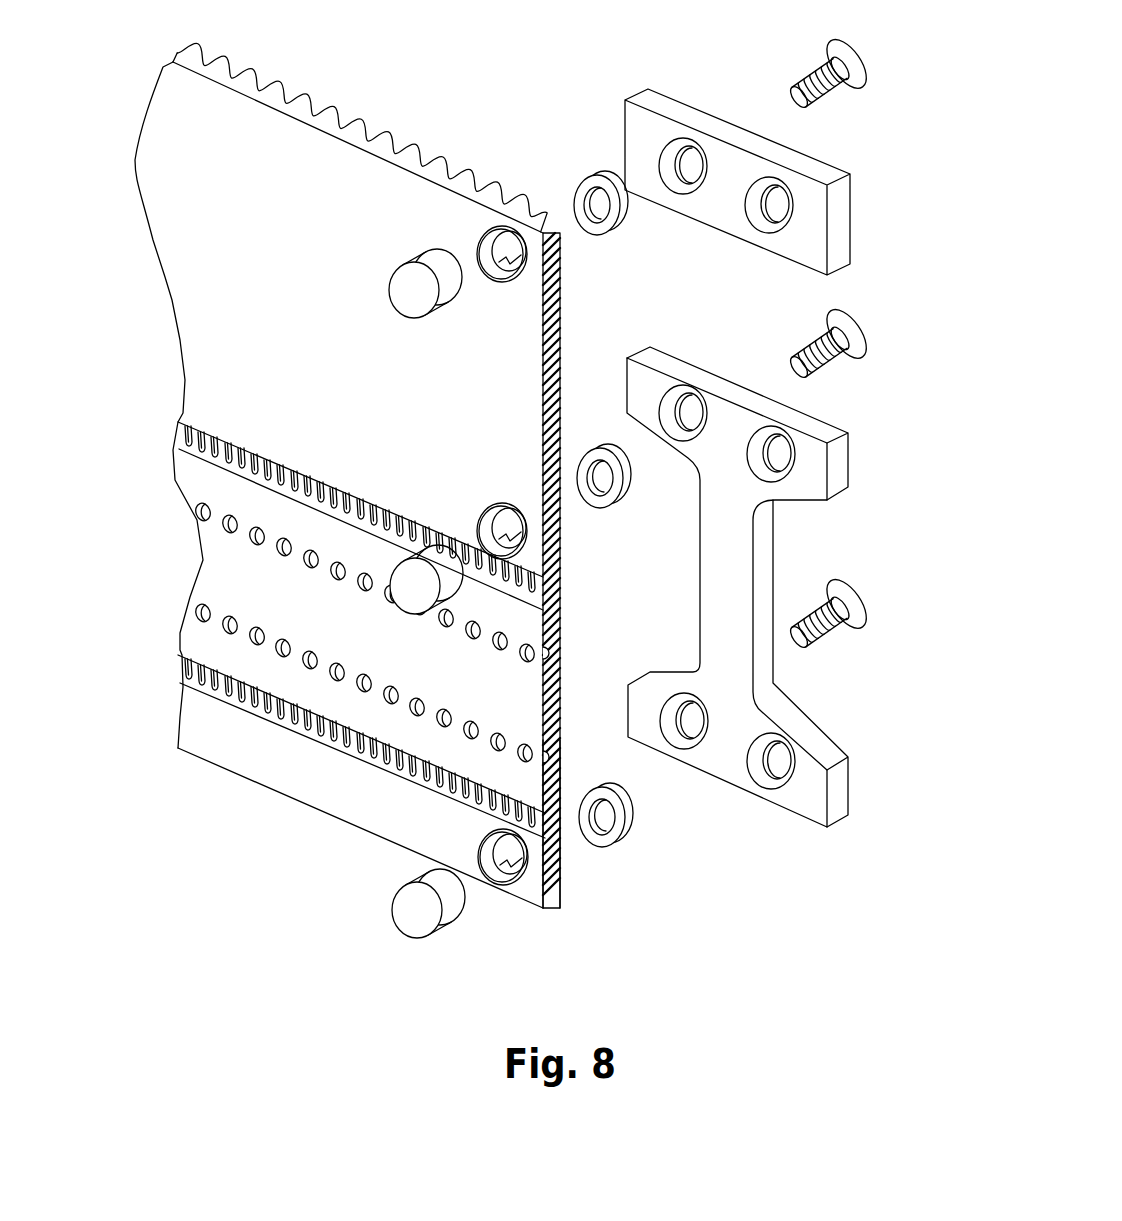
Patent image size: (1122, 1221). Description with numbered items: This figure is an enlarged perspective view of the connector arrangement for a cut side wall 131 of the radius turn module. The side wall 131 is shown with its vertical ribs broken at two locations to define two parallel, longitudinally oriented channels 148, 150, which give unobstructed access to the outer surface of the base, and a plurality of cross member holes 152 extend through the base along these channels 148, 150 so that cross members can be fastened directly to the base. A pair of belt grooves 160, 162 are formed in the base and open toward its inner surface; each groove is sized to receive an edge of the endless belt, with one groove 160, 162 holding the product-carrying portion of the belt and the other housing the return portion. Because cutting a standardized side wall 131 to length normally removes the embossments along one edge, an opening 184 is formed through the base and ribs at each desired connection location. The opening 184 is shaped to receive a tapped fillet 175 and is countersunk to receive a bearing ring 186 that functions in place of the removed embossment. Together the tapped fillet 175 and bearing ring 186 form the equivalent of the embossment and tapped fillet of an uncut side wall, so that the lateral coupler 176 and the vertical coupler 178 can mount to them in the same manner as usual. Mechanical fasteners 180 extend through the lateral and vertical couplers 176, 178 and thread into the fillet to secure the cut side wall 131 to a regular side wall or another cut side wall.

The side wall 131 is at (308, 92).
The channel 148 is at (550, 653).
The channel 150 is at (550, 757).
The cross member holes 152 is at (222, 535).
The belt groove 160 is at (188, 440).
The belt groove 162 is at (187, 670).
The tapped fillet 175 is at (428, 258).
The lateral coupler 176 is at (848, 178).
The vertical coupler 178 is at (848, 447).
The mechanical fasteners 180 is at (870, 53).
The opening 184 is at (500, 232).
The bearing ring 186 is at (578, 188).